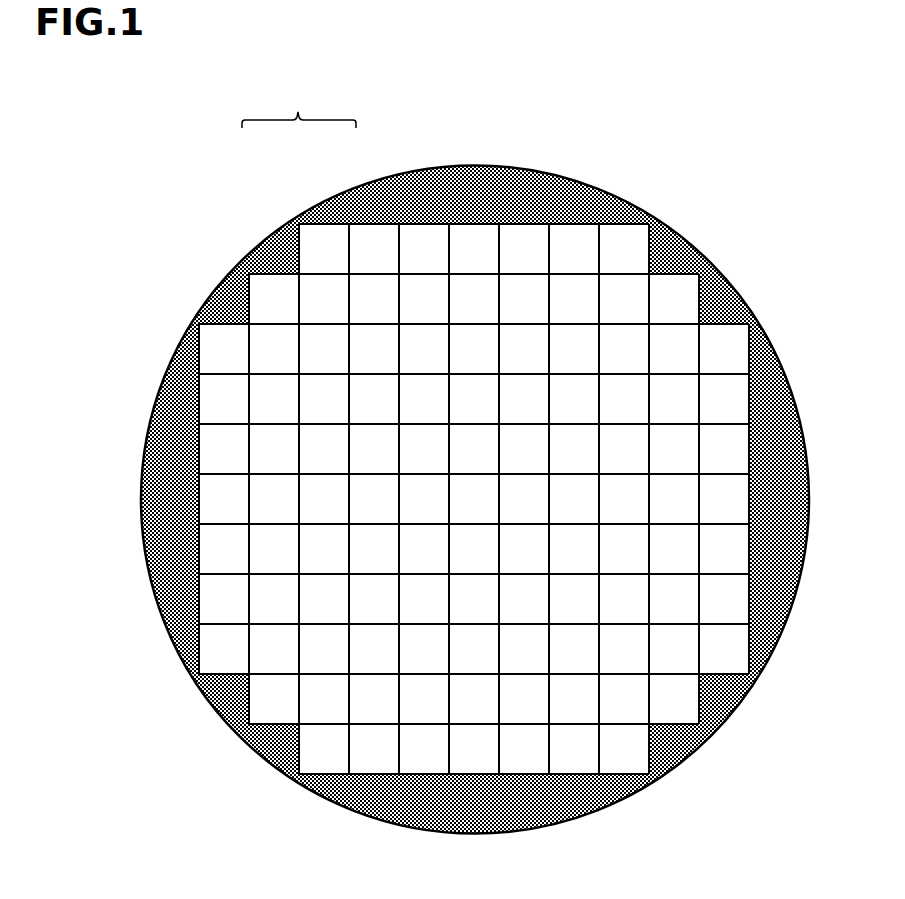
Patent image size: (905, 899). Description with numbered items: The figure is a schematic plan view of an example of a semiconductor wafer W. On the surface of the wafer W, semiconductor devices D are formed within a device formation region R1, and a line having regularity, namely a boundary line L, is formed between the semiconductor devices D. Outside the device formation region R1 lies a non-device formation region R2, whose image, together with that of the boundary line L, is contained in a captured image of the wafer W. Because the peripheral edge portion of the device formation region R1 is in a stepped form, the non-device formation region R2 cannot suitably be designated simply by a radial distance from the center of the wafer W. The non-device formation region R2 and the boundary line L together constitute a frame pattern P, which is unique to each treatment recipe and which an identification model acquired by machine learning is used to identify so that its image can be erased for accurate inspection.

The wafer W is at (735, 213).
The semiconductor device D is at (198, 412).
The boundary line L is at (370, 223).
The device formation region R1 is at (235, 335).
The non-device formation region R2 is at (290, 227).
The frame pattern P is at (299, 104).